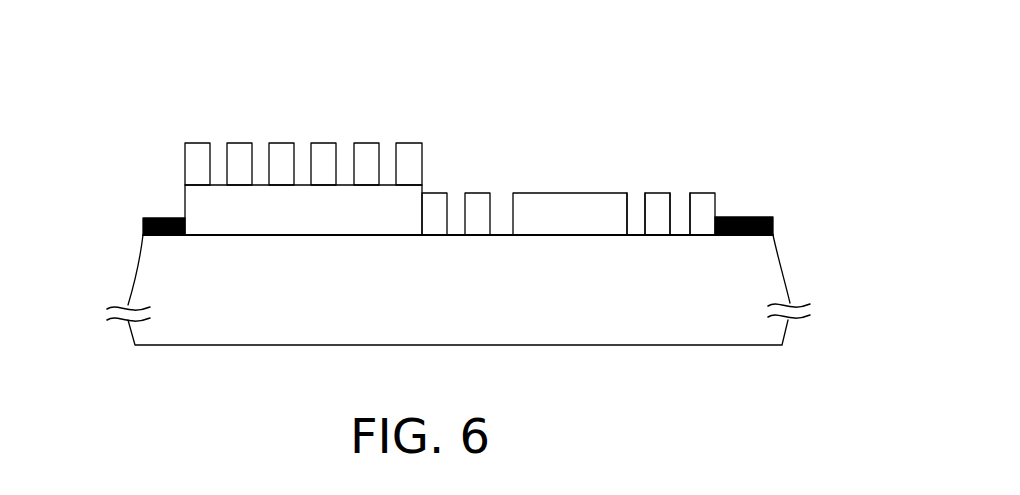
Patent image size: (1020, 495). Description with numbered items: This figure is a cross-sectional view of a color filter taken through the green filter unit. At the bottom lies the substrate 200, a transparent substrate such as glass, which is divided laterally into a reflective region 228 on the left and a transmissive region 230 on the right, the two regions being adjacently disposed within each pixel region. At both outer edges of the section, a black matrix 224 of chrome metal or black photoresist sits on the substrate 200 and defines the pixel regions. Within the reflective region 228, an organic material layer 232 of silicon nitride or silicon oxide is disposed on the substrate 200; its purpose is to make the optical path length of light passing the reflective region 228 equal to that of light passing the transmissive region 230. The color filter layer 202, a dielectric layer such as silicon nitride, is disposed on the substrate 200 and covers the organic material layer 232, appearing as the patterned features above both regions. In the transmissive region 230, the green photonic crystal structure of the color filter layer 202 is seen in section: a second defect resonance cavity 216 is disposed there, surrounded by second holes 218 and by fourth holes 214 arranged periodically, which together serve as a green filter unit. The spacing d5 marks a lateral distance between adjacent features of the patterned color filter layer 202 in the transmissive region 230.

The substrate 200 is at (748, 327).
The color filter layer 202 is at (161, 143).
The fourth holes 214 is at (680, 210).
The second defect resonance cavity 216 is at (570, 213).
The second holes 218 is at (637, 210).
The black matrix 224 is at (143, 228).
The reflective region 228 is at (422, 77).
The transmissive region 230 is at (715, 77).
The organic material layer 232 is at (201, 202).
The spacing distance d5 is at (507, 218).